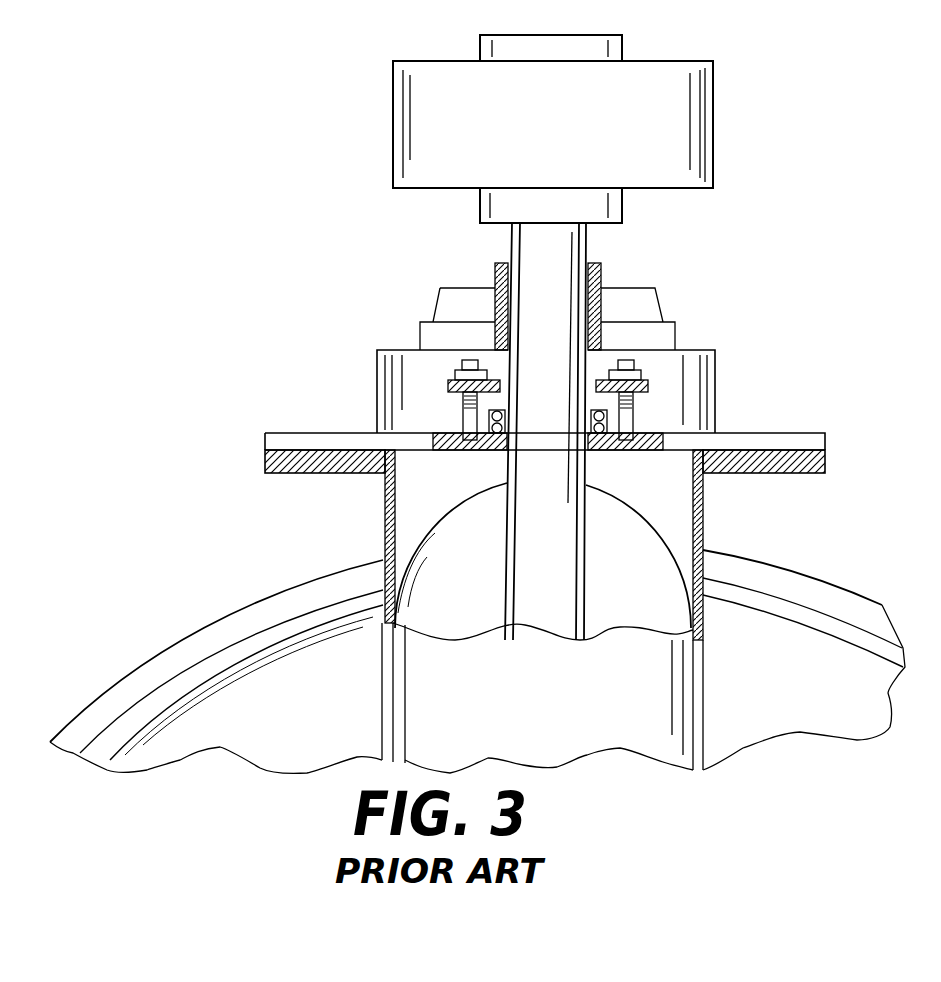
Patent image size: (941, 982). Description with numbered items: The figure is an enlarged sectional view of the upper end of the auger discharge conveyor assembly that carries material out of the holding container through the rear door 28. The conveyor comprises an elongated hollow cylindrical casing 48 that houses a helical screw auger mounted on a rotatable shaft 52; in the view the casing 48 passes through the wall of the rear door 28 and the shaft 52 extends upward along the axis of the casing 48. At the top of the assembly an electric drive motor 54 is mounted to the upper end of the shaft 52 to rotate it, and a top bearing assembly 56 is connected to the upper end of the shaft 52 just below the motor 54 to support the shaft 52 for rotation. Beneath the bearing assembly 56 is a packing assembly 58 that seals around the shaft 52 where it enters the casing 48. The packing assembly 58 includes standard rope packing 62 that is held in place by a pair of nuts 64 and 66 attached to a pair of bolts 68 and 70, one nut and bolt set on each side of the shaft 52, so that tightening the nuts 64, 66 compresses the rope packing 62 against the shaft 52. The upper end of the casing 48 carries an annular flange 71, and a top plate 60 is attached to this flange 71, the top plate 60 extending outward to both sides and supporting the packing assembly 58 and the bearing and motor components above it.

The rear door 28 is at (786, 637).
The elongated hollow cylindrical casing 48 is at (383, 508).
The rotatable shaft 52 is at (590, 243).
The electric drive motor 54 is at (683, 61).
The top bearing assembly 56 is at (657, 287).
The packing assembly 58 is at (714, 349).
The top plate 60 is at (800, 433).
The rope packing 62 is at (462, 413).
The nut 64 is at (456, 372).
The nut 66 is at (641, 373).
The bolt 68 is at (489, 418).
The bolt 70 is at (633, 407).
The annular flange 71 is at (267, 474).